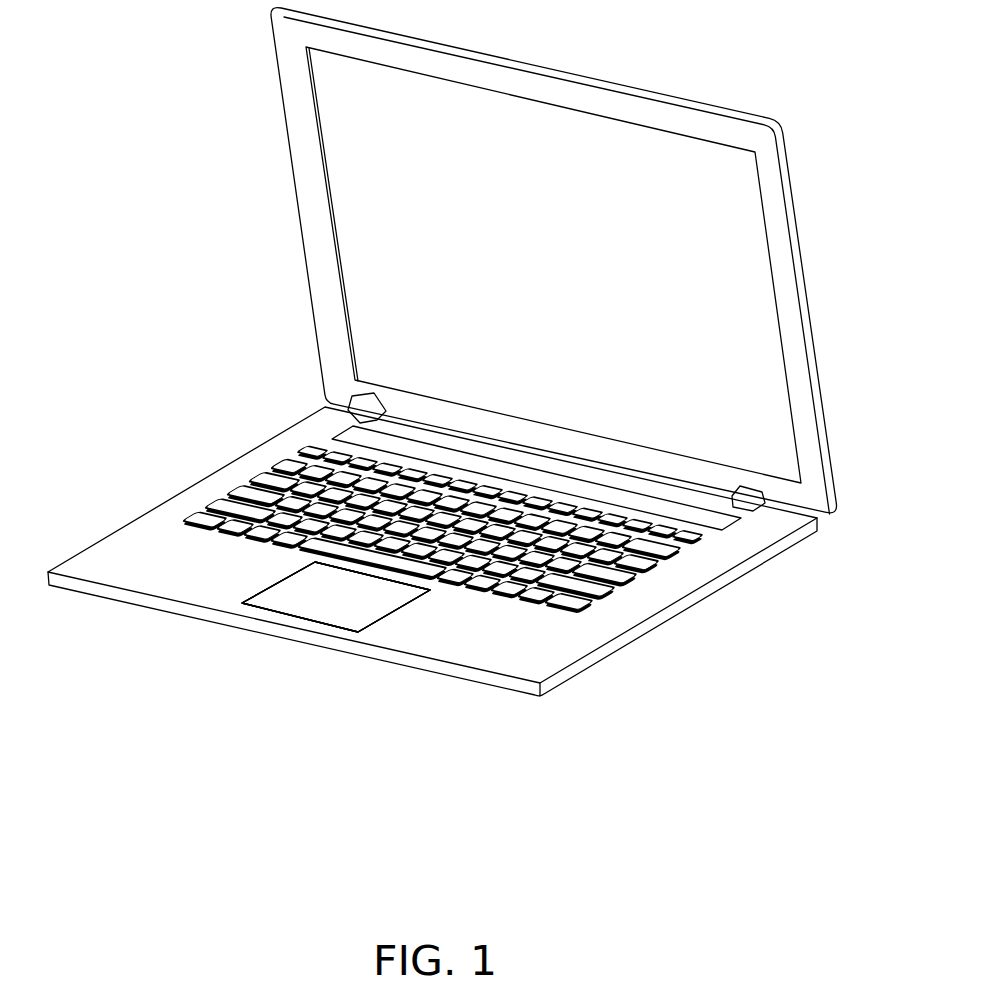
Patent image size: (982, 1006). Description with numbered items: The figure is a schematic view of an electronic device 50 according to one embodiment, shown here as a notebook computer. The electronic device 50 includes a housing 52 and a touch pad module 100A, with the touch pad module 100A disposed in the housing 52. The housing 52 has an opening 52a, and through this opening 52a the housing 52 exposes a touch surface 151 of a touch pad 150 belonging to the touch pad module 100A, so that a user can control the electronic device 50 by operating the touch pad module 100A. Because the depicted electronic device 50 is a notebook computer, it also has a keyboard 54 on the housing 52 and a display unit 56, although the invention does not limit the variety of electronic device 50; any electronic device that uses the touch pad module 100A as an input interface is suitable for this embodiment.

The electronic device 50 is at (442, 382).
The housing 52 is at (625, 608).
The opening 52a is at (378, 608).
The keyboard 54 is at (633, 577).
The display unit 56 is at (357, 197).
The touch pad module 100A is at (275, 620).
The touch pad 150 is at (340, 618).
The touch surface 151 is at (297, 591).